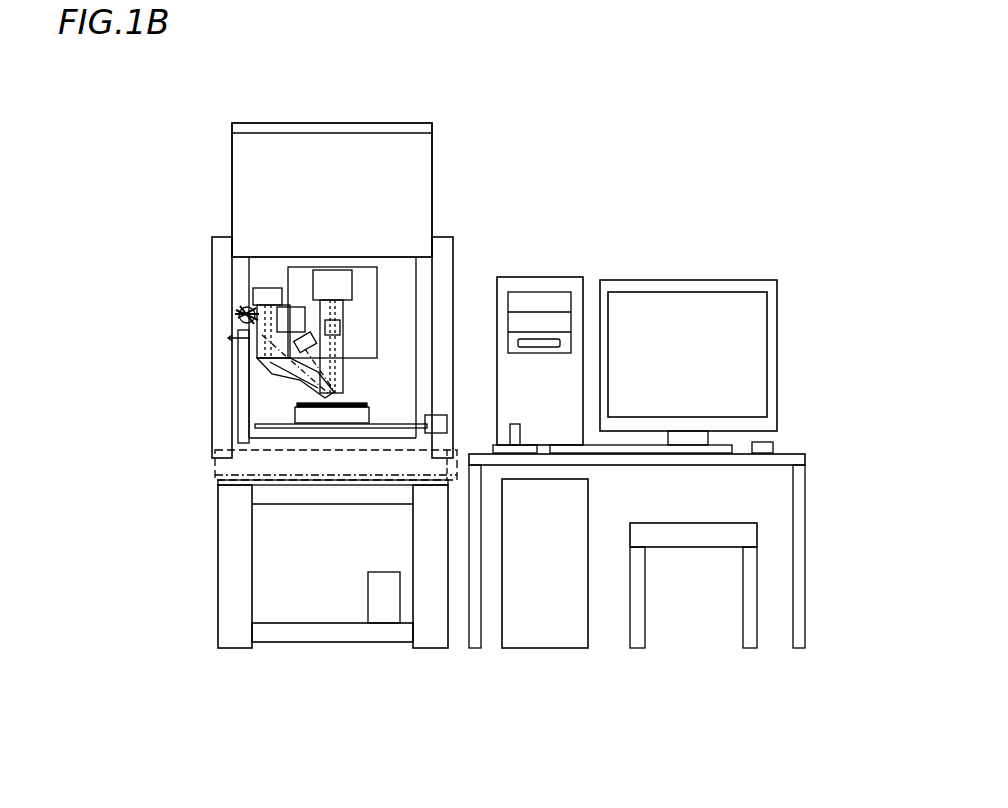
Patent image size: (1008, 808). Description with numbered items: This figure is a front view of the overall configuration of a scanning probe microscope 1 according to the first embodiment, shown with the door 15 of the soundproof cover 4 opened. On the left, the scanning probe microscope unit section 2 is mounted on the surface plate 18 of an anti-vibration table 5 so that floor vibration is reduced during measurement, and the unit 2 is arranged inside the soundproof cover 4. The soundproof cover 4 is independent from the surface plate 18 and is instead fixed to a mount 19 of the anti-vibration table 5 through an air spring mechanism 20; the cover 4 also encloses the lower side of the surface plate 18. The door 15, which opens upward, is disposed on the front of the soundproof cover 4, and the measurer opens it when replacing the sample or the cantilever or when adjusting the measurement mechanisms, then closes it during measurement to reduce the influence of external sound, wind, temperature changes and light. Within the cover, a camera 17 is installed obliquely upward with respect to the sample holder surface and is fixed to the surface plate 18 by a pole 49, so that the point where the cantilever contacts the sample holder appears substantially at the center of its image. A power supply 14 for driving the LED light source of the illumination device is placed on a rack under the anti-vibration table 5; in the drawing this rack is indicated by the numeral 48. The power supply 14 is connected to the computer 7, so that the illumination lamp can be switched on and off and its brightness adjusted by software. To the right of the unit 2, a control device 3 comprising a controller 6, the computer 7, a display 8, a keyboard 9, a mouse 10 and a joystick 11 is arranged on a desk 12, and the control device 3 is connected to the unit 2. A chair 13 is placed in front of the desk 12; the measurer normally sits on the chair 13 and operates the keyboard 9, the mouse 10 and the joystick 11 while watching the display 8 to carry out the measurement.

The scanning probe microscope 1 is at (522, 186).
The scanning probe microscope unit section 2 is at (260, 280).
The control device 3 is at (648, 232).
The soundproof cover 4 is at (443, 265).
The anti-vibration table 5 is at (230, 567).
The controller 6 is at (543, 625).
The computer 7 is at (543, 285).
The display 8 is at (748, 337).
The keyboard 9 is at (617, 450).
The mouse 10 is at (760, 448).
The joystick 11 is at (503, 440).
The desk 12 is at (797, 458).
The chair 13 is at (715, 537).
The power supply 14 is at (383, 610).
The door 15 is at (252, 192).
The camera 17 is at (233, 315).
The surface plate 18 is at (228, 461).
The mount 19 is at (230, 530).
The air spring mechanism 20 is at (222, 489).
The shelf 48 is at (307, 632).
The pole 49 is at (232, 365).